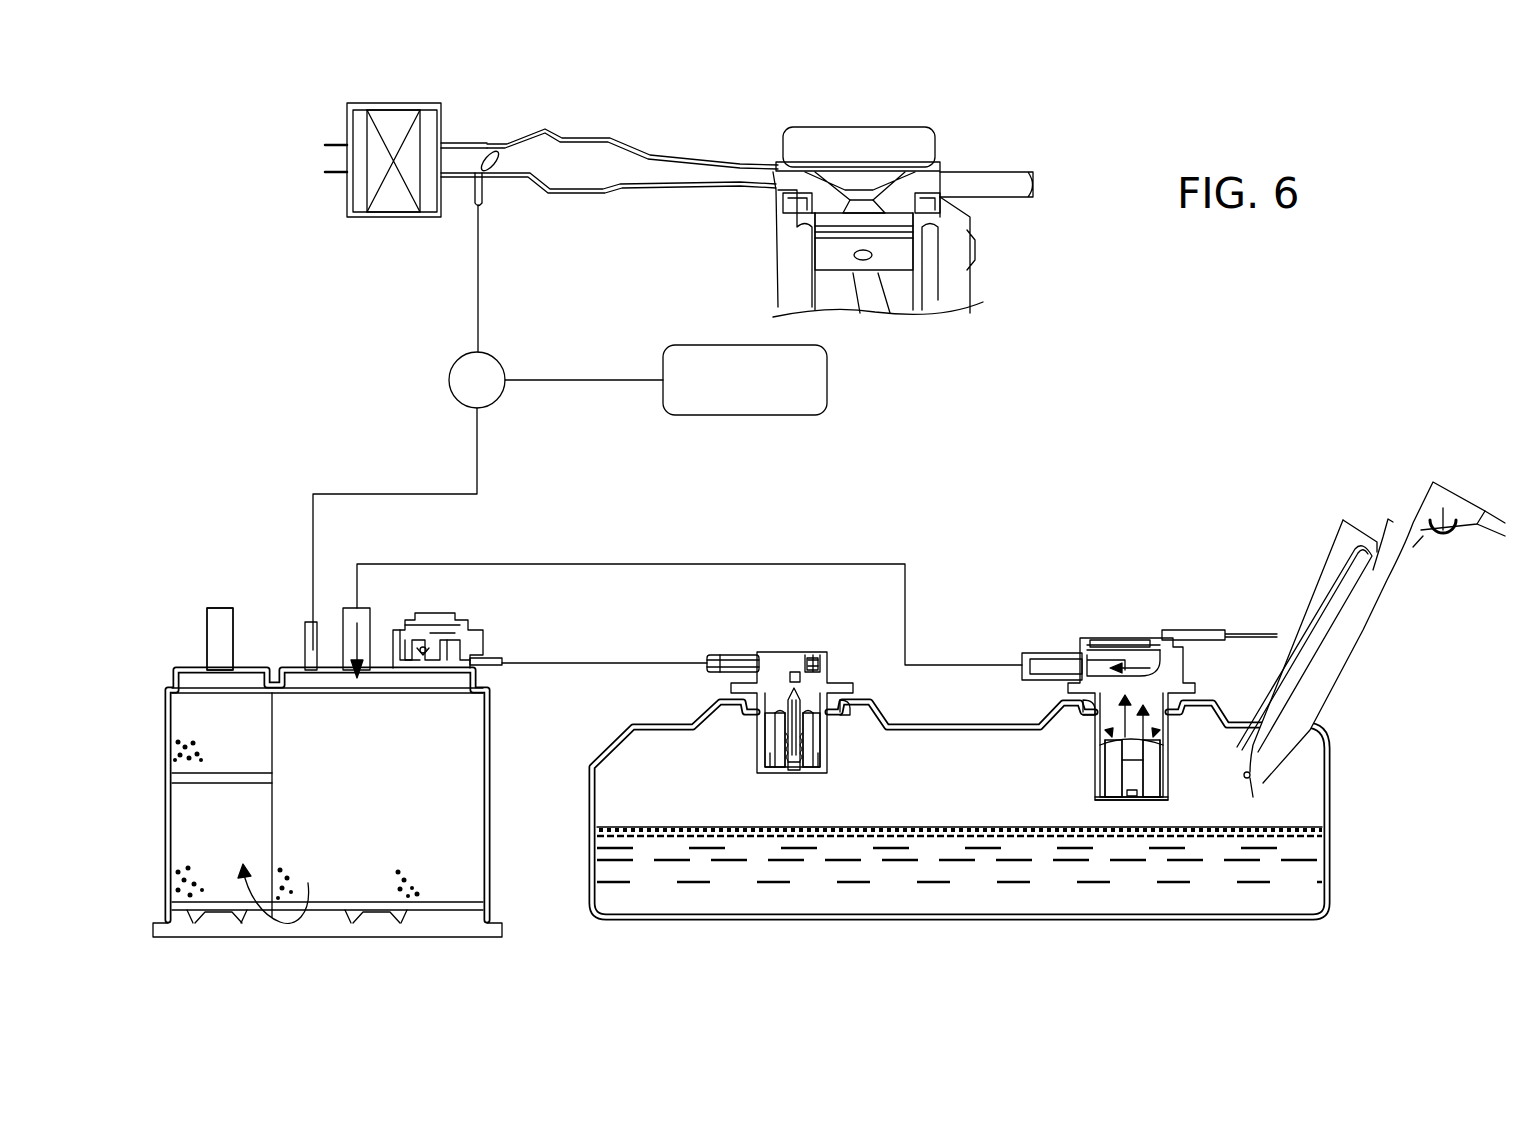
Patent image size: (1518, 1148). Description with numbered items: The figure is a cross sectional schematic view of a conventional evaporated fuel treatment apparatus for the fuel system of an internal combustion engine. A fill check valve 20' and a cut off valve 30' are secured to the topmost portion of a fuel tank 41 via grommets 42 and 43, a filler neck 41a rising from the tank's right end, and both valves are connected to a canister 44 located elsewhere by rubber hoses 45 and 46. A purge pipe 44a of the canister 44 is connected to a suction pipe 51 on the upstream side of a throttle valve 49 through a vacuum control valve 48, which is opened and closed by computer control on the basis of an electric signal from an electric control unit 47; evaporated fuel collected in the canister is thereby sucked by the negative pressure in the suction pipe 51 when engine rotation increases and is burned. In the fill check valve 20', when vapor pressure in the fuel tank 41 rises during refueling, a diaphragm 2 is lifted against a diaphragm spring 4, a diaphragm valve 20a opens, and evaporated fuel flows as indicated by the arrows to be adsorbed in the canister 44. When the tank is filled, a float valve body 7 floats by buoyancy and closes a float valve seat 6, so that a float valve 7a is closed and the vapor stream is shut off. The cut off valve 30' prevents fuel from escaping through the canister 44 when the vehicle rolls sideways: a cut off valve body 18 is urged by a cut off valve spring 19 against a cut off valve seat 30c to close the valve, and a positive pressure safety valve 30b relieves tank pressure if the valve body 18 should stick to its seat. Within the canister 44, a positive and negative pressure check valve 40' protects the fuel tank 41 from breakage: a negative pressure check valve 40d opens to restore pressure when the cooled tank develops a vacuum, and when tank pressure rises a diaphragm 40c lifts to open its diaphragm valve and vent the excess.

The diaphragm 2 is at (1115, 642).
The diaphragm spring 4 is at (1145, 643).
The float valve seat 6 is at (1162, 738).
The float valve body 7 is at (1108, 760).
The float valve 7a is at (1172, 798).
The cut off valve body 18 is at (770, 740).
The cut off valve spring 19 is at (810, 750).
The fill check valve 20' is at (1131, 668).
The diaphragm valve 20a is at (1095, 632).
The cut off valve 30' is at (818, 686).
The positive pressure safety valve 30b is at (808, 656).
The cut off valve seat 30c is at (790, 668).
The positive and negative pressure check valve 40' is at (452, 613).
The diaphragm 40c is at (455, 648).
The negative pressure check valve 40d is at (400, 657).
The fuel tank 41 is at (1330, 797).
The filler neck 41a is at (1357, 640).
The grommet 42 is at (1085, 722).
The grommet 43 is at (840, 718).
The canister 44 is at (490, 778).
The purge pipe 44a is at (304, 640).
The rubber hose 45 is at (810, 563).
The rubber hose 46 is at (560, 665).
The electric control unit (ECU) 47 is at (713, 415).
The vacuum control valve (VCV) 48 is at (498, 398).
The throttle valve 49 is at (497, 156).
The suction pipe 51 is at (650, 194).